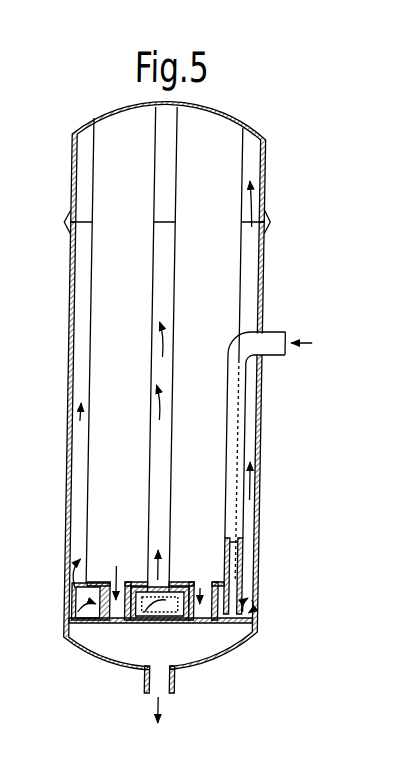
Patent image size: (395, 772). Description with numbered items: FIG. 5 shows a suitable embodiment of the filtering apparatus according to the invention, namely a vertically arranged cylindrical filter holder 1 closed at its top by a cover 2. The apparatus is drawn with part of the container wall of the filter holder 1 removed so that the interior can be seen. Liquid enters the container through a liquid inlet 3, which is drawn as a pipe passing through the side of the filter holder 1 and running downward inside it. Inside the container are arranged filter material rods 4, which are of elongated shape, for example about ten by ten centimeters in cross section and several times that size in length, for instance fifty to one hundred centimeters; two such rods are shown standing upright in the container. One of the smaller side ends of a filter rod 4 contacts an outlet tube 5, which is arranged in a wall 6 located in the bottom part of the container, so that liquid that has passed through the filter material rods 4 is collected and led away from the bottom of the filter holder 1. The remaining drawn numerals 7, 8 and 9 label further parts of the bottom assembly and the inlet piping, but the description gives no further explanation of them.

The filter holder 1 is at (268, 517).
The cover 2 is at (268, 177).
The liquid inlet 3 is at (291, 333).
The filter material rods 4 is at (105, 296).
The outlet tube 5 is at (123, 610).
The wall 6 is at (241, 625).
The collecting chamber 7 is at (97, 603).
The bottom chamber 8 is at (167, 593).
The inlet pipe 9 is at (240, 442).